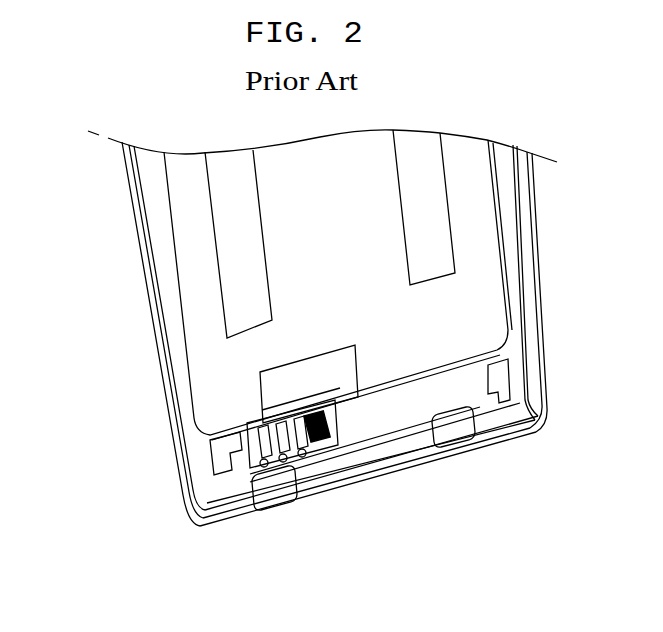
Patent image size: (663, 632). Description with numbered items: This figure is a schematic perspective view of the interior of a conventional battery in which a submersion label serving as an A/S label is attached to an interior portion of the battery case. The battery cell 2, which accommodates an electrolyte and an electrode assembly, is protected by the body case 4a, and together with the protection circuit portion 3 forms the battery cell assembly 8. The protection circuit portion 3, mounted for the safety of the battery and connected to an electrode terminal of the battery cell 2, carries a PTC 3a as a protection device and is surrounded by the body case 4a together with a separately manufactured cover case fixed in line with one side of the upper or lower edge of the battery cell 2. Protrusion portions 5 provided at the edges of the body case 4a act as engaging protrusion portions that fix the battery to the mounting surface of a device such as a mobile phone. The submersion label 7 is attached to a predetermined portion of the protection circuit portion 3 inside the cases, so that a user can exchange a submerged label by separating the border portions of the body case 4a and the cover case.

The battery cell 2 is at (387, 342).
The protection circuit portion 3 is at (483, 390).
The PTC 3a is at (237, 488).
The body case 4a is at (165, 378).
The protrusion portion 5 is at (273, 500).
The submersion label 7 is at (335, 465).
The battery cell assembly 8 is at (542, 541).